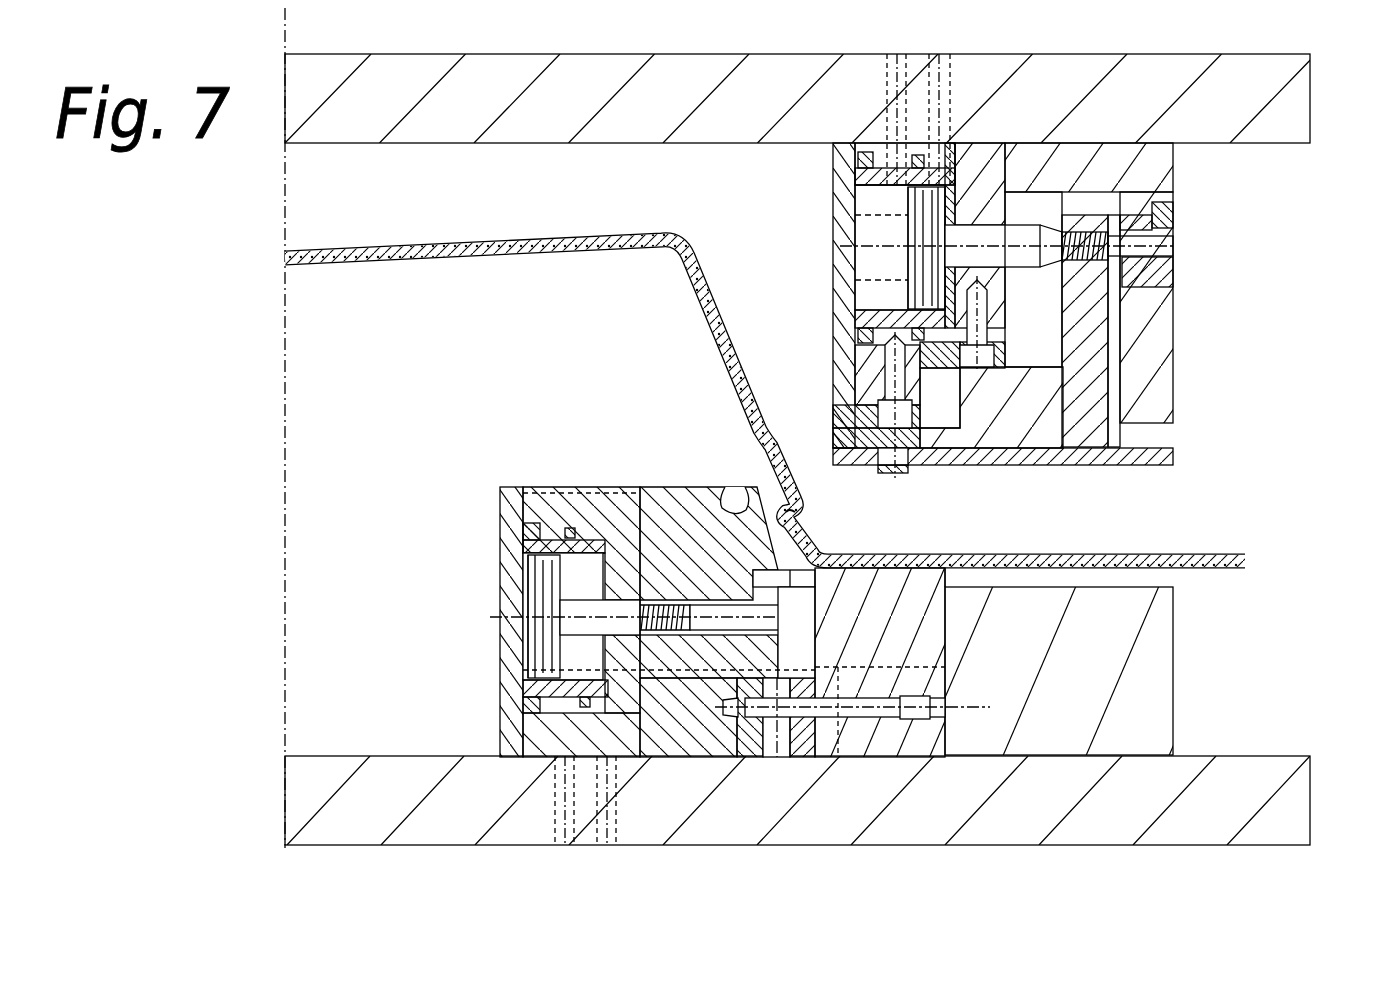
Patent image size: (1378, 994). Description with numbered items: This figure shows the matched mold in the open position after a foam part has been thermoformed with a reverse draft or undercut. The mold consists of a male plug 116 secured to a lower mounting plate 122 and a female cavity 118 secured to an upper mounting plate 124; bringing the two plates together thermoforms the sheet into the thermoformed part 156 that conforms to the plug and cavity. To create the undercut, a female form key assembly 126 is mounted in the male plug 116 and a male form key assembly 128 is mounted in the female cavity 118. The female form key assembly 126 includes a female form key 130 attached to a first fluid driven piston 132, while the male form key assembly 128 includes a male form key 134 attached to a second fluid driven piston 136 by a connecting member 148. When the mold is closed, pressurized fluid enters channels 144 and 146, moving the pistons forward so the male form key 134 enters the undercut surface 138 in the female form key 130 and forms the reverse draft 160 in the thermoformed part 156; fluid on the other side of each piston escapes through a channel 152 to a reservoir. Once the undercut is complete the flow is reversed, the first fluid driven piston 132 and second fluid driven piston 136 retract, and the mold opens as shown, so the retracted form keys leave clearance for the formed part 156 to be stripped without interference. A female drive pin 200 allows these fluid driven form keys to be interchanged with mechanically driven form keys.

The male plug 116 is at (781, 591).
The female cavity 118 is at (748, 163).
The lower mounting plate 122 is at (353, 850).
The upper mounting plate 124 is at (625, 62).
The female form key assembly 126 is at (596, 596).
The male form key assembly 128 is at (1000, 333).
The female form key 130 is at (717, 591).
The first fluid driven piston 132 is at (520, 578).
The male form key 134 is at (833, 440).
The second fluid driven piston 136 is at (905, 208).
The undercut surface 138 is at (745, 520).
The channel 144 is at (612, 846).
The channel 146 is at (950, 53).
The connecting member 148 is at (1105, 333).
The channel 152 is at (887, 53).
The thermoformed part 156 is at (710, 302).
The reverse draft 160 is at (795, 515).
The female drive pin 200 is at (905, 474).